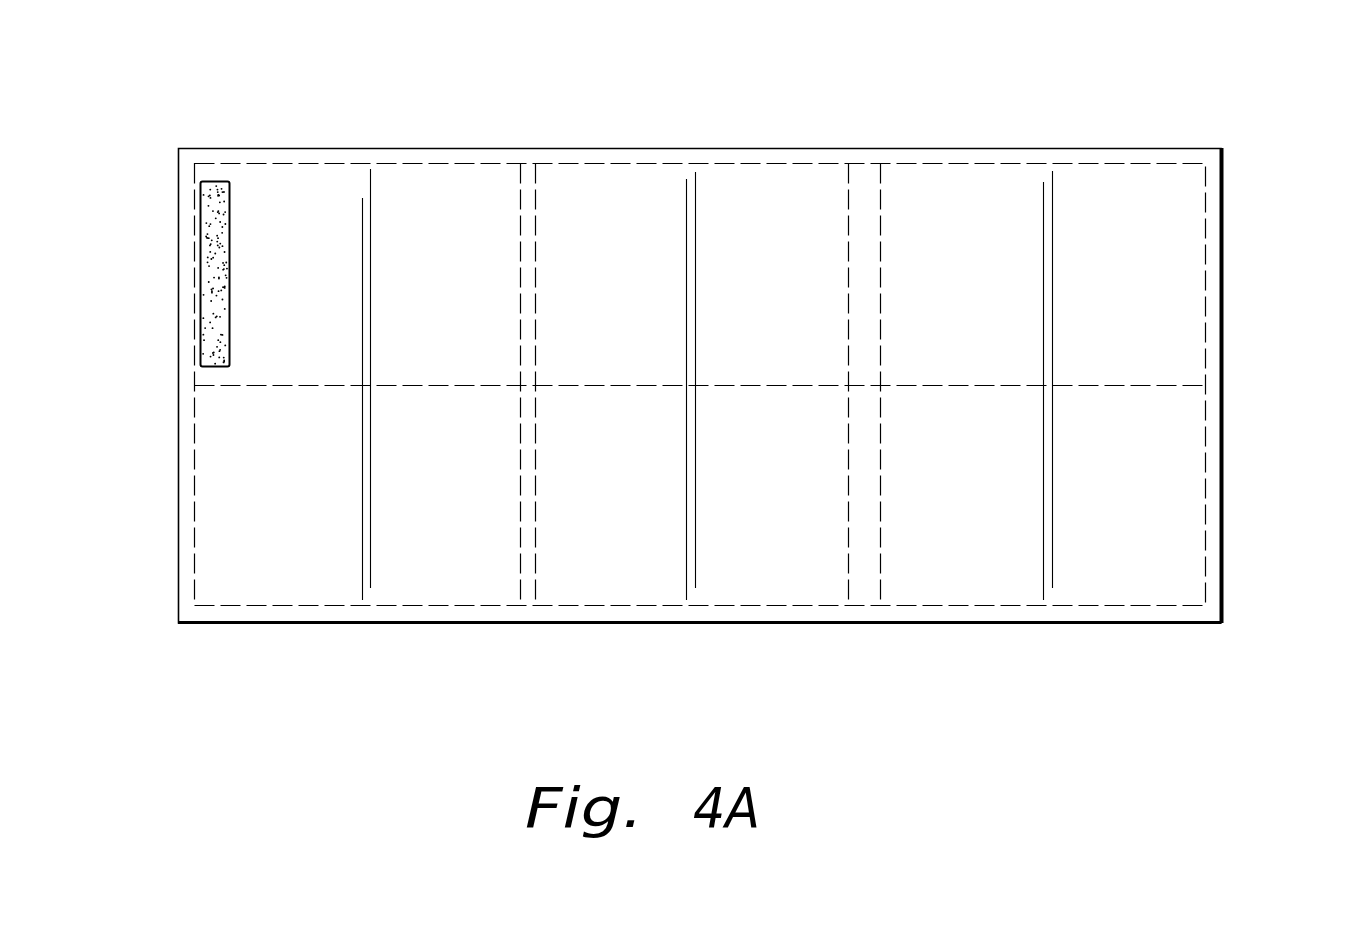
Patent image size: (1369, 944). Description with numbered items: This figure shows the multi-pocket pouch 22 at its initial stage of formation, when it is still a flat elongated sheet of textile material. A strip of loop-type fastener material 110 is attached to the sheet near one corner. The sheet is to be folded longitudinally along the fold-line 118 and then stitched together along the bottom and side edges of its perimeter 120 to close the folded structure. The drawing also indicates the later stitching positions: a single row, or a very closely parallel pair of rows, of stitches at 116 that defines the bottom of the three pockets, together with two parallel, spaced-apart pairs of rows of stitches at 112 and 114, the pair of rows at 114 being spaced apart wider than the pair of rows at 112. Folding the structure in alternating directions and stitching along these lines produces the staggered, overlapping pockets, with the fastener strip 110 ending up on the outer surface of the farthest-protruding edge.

The multi-pocket pouch 22 is at (324, 703).
The strip of loop-type fastener material 110 is at (210, 248).
The pair of rows of stitches 112 is at (537, 600).
The pair of rows of stitches 114 is at (866, 600).
The row of stitches 116 is at (362, 207).
The fold-line 118 is at (1098, 383).
The perimeter 120 is at (1208, 525).